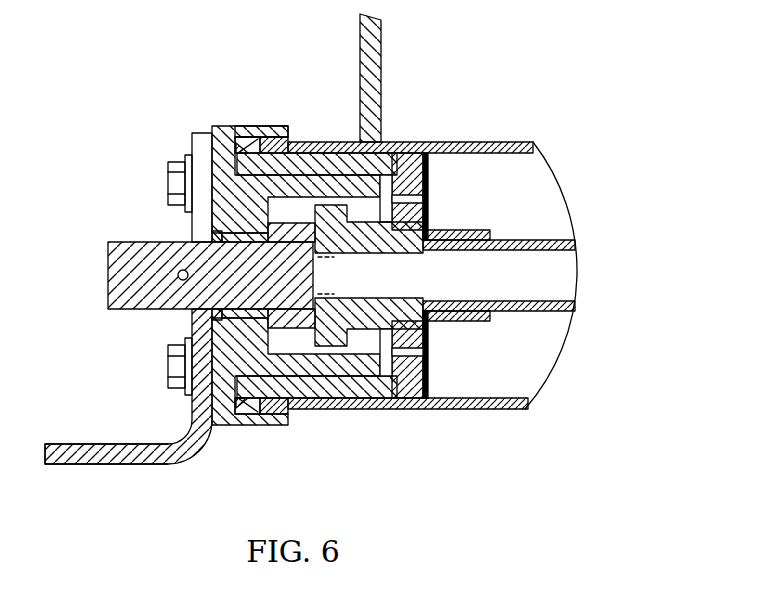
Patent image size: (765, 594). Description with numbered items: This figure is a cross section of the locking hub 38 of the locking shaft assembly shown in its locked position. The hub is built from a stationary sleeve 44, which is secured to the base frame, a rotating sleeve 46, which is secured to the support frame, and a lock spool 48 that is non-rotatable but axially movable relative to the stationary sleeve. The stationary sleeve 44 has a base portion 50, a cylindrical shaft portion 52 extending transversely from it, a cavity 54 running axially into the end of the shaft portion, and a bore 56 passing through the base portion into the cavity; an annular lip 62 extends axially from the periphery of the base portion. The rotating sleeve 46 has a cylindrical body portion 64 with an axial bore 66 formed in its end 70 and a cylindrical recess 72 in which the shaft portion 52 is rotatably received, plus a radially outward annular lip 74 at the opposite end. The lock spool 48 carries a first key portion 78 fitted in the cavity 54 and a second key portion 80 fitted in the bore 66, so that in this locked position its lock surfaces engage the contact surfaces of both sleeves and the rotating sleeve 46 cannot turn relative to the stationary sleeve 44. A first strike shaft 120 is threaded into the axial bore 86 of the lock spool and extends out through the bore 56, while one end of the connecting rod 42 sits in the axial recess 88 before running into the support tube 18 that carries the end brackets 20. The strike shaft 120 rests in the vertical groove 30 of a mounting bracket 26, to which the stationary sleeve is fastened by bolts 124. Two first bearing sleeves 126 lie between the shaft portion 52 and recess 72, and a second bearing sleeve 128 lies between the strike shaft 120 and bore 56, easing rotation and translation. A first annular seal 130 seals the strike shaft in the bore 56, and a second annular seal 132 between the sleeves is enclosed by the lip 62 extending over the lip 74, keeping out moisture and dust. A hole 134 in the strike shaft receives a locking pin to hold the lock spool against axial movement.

The support tube 18 is at (497, 407).
The end bracket 20 is at (383, 52).
The mounting bracket 26 is at (98, 472).
The vertical groove 30 is at (205, 222).
The locking hub 38 is at (410, 430).
The connecting rod 42 is at (550, 240).
The stationary sleeve 44 is at (228, 440).
The rotating sleeve 46 is at (434, 170).
The lock spool 48 is at (434, 218).
The base portion 50 is at (222, 128).
The shaft portion 52 is at (363, 382).
The cavity 54 is at (268, 427).
The bore 56 is at (222, 250).
The annular lip 62 is at (262, 135).
The body portion 64 is at (402, 185).
The axial bore 66 is at (430, 199).
The end 70 is at (432, 385).
The cylindrical recess 72 is at (428, 356).
The annular lip 74 is at (270, 145).
The first key portion 78 is at (308, 382).
The second key portion 80 is at (415, 178).
The axial bore 86 is at (408, 285).
The axial recess 88 is at (478, 250).
The first strike shaft 120 is at (112, 310).
The bolt 124 is at (170, 178).
The first bearing sleeve 126 is at (334, 382).
The second bearing sleeve 128 is at (190, 357).
The first annular seal 130 is at (212, 322).
The second annular seal 132 is at (247, 158).
The hole 134 is at (178, 274).